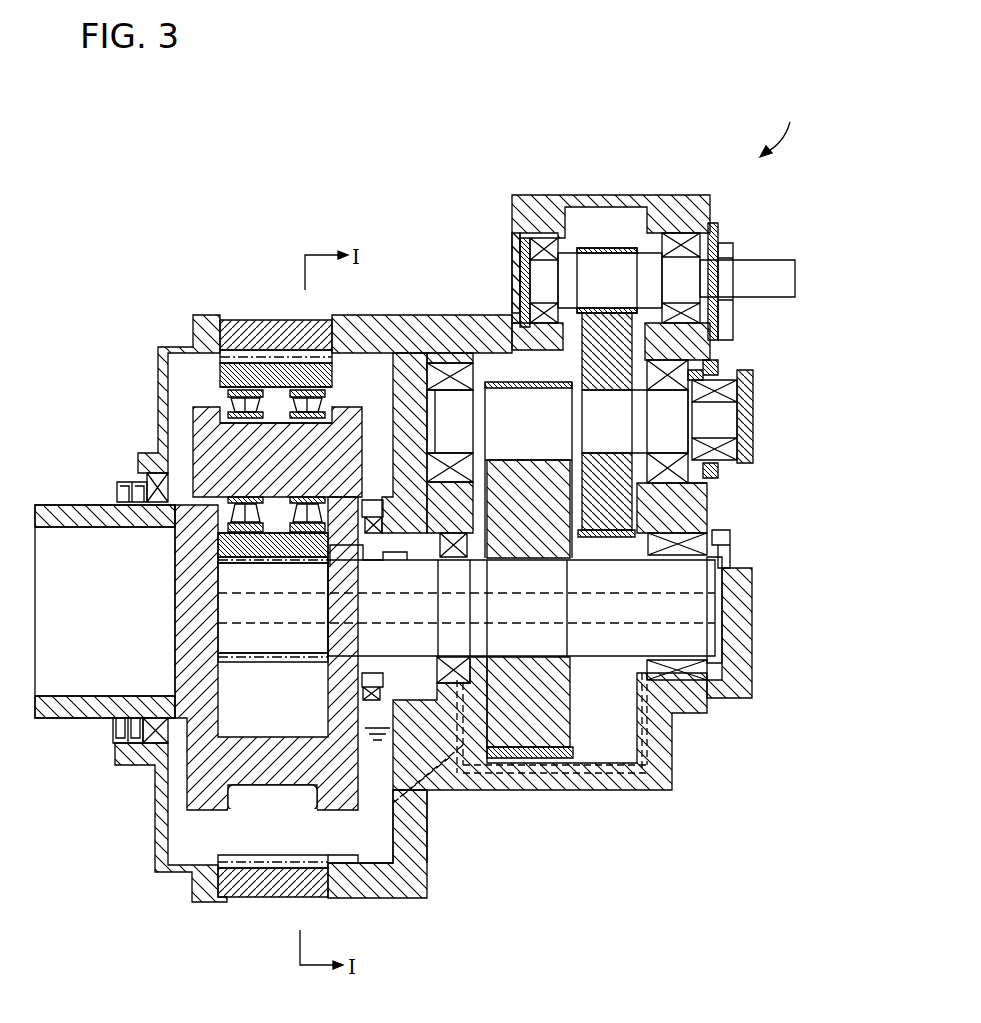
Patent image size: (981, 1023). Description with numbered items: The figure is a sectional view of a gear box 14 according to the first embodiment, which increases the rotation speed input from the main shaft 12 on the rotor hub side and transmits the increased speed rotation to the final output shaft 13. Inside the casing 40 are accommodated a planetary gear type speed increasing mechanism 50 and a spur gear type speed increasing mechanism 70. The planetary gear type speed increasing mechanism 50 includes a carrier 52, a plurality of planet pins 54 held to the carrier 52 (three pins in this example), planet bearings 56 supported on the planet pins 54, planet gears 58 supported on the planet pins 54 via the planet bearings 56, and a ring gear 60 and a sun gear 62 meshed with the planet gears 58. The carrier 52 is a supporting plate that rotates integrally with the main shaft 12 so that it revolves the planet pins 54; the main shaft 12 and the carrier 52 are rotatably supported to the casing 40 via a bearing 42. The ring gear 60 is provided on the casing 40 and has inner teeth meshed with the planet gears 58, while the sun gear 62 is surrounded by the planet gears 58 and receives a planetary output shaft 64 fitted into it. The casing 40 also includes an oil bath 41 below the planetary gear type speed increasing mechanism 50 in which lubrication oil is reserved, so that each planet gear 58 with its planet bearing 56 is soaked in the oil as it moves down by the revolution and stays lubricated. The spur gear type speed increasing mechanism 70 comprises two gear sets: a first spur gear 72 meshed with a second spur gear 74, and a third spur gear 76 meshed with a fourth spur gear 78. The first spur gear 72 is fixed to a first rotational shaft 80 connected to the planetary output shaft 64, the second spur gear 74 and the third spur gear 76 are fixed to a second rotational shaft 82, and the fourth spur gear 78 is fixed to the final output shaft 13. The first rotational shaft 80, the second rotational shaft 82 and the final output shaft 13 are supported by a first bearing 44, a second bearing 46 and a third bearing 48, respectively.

The main shaft 12 is at (63, 720).
The final output shaft 13 is at (767, 260).
The gear box 14 is at (826, 114).
The casing 40 is at (428, 862).
The oil bath 41 is at (377, 852).
The bearing 42 is at (120, 492).
The first bearing 44 is at (455, 683).
The second bearing 46 is at (413, 352).
The third bearing 48 is at (525, 248).
The planetary gear type speed increasing mechanism 50 is at (186, 790).
The carrier 52 is at (230, 410).
The planet pins 54 is at (205, 443).
The planet bearings 56 is at (222, 400).
The planet gears 58 is at (220, 375).
The ring gear 60 is at (267, 335).
The sun gear 62 is at (243, 663).
The planetary output shaft 64 is at (298, 645).
The spur gear type speed increasing mechanism 70 is at (597, 742).
The first spur gear 72 is at (533, 735).
The second spur gear 74 is at (500, 405).
The third spur gear 76 is at (620, 497).
The fourth spur gear 78 is at (603, 255).
The first rotational shaft 80 is at (708, 637).
The second rotational shaft 82 is at (452, 366).